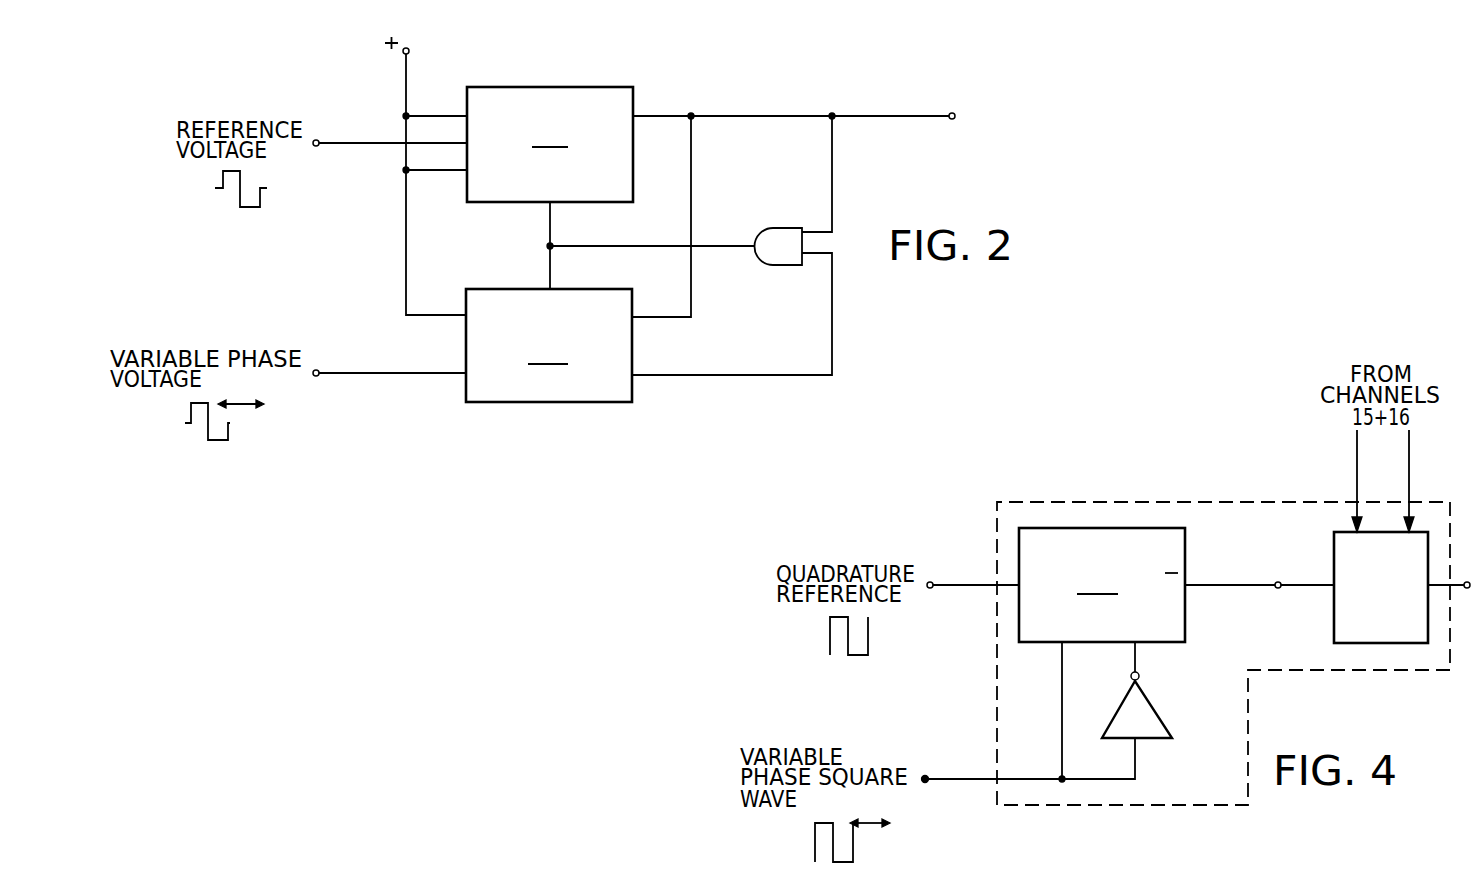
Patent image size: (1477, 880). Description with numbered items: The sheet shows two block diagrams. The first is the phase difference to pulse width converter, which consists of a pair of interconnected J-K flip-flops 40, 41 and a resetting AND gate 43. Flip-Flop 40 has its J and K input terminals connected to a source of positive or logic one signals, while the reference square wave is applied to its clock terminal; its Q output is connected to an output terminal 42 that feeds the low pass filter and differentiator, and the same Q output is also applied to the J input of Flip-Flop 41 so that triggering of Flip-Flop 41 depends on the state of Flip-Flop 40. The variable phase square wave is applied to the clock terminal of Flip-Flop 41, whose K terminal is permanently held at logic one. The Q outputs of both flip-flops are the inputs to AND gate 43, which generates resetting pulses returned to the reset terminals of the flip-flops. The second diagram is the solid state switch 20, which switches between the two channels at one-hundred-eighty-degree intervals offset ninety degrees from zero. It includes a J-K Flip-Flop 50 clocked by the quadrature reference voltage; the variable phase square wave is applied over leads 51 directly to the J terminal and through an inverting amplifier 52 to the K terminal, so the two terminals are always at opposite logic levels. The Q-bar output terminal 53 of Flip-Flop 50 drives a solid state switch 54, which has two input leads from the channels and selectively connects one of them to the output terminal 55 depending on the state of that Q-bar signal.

In FIG. 4, the solid state switch 20 is at (1230, 476).
In FIG. 2, the J-K Flip-Flop 40 is at (562, 86).
In FIG. 2, the J-K Flip-Flop 41 is at (550, 403).
In FIG. 2, the output terminal 42 is at (910, 115).
In FIG. 2, the resetting AND gate 43 is at (783, 228).
In FIG. 4, the J-K Flip-Flop 50 is at (1172, 607).
In FIG. 4, the leads 51 is at (958, 780).
In FIG. 4, the inverting amplifier 52 is at (1158, 712).
In FIG. 4, the Q-bar output terminal 53 is at (1278, 582).
In FIG. 4, the solid state switch 54 is at (1347, 622).
In FIG. 4, the output terminal 55 is at (1467, 582).